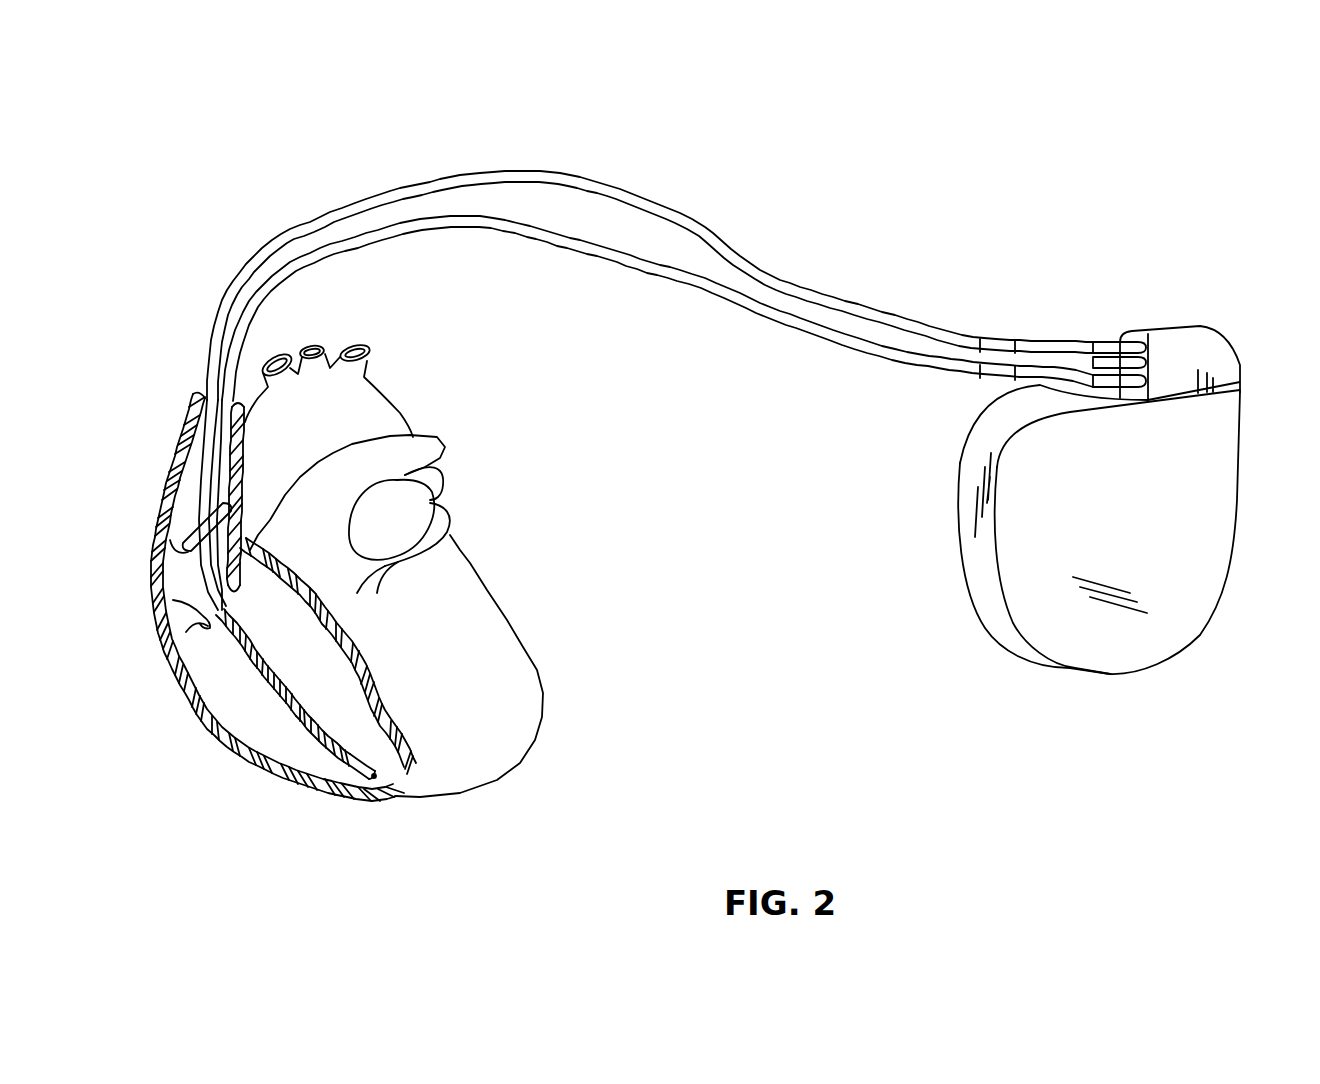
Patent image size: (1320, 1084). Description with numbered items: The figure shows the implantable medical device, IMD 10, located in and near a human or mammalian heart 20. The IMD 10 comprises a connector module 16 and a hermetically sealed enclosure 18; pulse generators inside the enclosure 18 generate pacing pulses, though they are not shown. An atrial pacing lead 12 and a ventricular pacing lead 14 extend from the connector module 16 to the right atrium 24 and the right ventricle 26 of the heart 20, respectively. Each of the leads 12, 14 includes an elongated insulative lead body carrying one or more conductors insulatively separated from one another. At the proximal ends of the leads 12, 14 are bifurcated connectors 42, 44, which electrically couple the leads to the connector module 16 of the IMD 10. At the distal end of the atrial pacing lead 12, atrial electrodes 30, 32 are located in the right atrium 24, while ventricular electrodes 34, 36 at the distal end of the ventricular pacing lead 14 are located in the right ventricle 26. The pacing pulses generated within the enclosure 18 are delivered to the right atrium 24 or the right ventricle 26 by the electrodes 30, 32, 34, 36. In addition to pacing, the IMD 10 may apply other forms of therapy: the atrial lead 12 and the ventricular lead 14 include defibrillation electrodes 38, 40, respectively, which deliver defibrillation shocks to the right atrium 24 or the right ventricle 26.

The IMD 10 is at (1212, 200).
The atrial pacing lead 12 is at (831, 302).
The ventricular pacing lead 14 is at (739, 299).
The connector module 16 is at (1178, 332).
The hermetically sealed enclosure 18 is at (1140, 655).
The heart 20 is at (537, 690).
The right atrium 24 is at (185, 526).
The right ventricle 26 is at (256, 720).
The atrial electrode 30 is at (236, 511).
The atrial electrode 32 is at (163, 554).
The ventricular electrode 34 is at (378, 778).
The ventricular electrode 36 is at (347, 757).
The defibrillation electrode 38 is at (178, 487).
The defibrillation electrode 40 is at (300, 720).
The bifurcated connector 42 is at (1083, 345).
The bifurcated connector 44 is at (1055, 376).